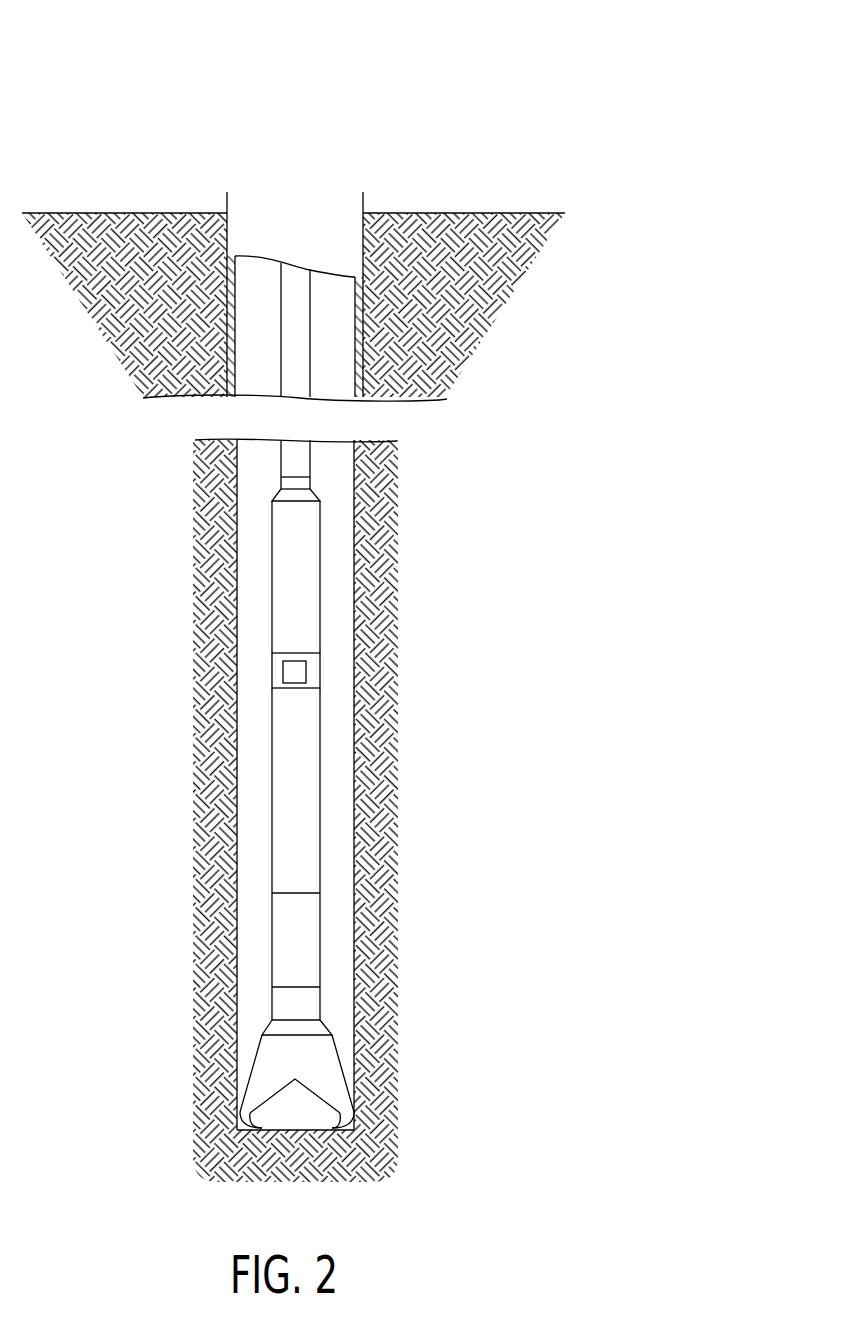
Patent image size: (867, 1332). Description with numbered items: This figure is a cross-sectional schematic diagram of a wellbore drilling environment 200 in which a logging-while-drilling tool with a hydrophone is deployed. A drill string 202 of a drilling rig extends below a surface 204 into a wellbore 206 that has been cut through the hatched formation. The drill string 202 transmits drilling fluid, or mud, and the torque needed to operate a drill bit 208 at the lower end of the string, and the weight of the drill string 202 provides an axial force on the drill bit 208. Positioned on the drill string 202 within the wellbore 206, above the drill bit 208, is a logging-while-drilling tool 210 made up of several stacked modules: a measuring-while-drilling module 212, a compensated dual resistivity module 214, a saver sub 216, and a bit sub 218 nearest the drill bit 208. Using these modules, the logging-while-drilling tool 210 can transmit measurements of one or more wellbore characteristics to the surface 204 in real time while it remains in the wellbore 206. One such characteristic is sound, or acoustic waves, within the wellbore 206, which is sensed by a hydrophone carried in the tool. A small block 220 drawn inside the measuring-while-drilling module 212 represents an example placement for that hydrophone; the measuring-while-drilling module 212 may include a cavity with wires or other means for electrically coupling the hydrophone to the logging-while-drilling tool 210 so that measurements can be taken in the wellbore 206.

The wellbore drilling environment 200 is at (247, 100).
The drill string 202 is at (310, 312).
The surface 204 is at (508, 213).
The wellbore 206 is at (323, 215).
The drill bit 208 is at (345, 1075).
The logging-while-drilling tool 210 is at (320, 542).
The measuring-while-drilling module 212 is at (320, 667).
The compensated dual resistivity module 214 is at (320, 790).
The saver sub 216 is at (320, 912).
The bit sub 218 is at (272, 1003).
The hydrophone placement block 220 is at (272, 672).